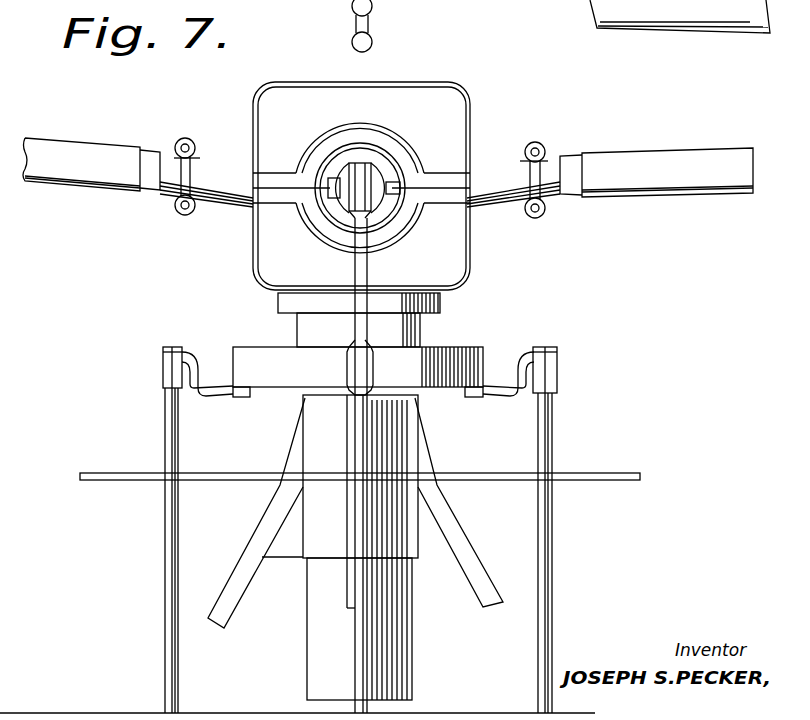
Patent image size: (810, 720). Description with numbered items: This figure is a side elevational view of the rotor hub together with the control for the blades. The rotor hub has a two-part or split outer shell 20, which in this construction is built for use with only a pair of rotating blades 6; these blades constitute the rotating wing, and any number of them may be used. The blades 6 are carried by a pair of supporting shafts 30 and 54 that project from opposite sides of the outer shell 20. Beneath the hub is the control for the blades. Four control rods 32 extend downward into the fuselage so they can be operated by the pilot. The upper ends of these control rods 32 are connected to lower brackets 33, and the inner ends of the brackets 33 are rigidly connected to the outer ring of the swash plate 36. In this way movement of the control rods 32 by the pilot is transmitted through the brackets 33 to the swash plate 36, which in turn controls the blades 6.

The rotating blades 6 is at (92, 150).
The rotor hub outer shell 20 is at (361, 186).
The supporting shaft 30 is at (227, 200).
The control rods 32 is at (165, 580).
The lower brackets 33 is at (197, 370).
The swash plate 36 is at (442, 358).
The supporting shaft 54 is at (155, 155).